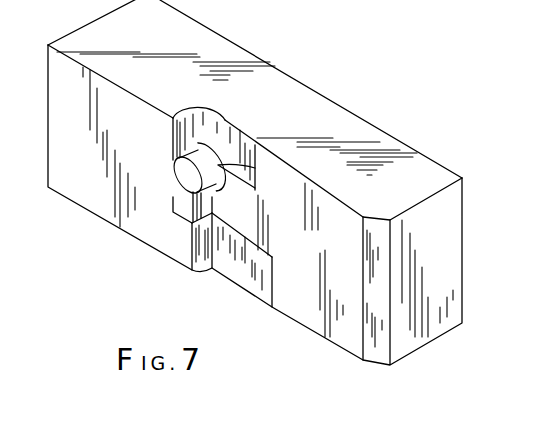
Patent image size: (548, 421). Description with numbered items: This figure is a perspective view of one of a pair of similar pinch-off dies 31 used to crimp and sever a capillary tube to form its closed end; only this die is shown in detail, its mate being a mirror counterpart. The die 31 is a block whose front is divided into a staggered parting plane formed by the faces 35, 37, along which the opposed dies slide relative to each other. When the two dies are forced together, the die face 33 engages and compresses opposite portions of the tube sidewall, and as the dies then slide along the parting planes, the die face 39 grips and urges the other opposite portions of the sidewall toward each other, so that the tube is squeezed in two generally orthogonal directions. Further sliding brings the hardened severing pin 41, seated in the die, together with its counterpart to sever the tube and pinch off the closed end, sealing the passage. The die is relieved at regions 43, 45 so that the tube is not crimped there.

The pinch-off die 31 is at (443, 217).
The die face 33 is at (213, 269).
The parting plane face 35 is at (73, 182).
The parting plane face 37 is at (320, 309).
The die face 39 is at (193, 206).
The severing pin 41 is at (178, 168).
The relieved region 43 is at (231, 135).
The relieved region 45 is at (245, 270).